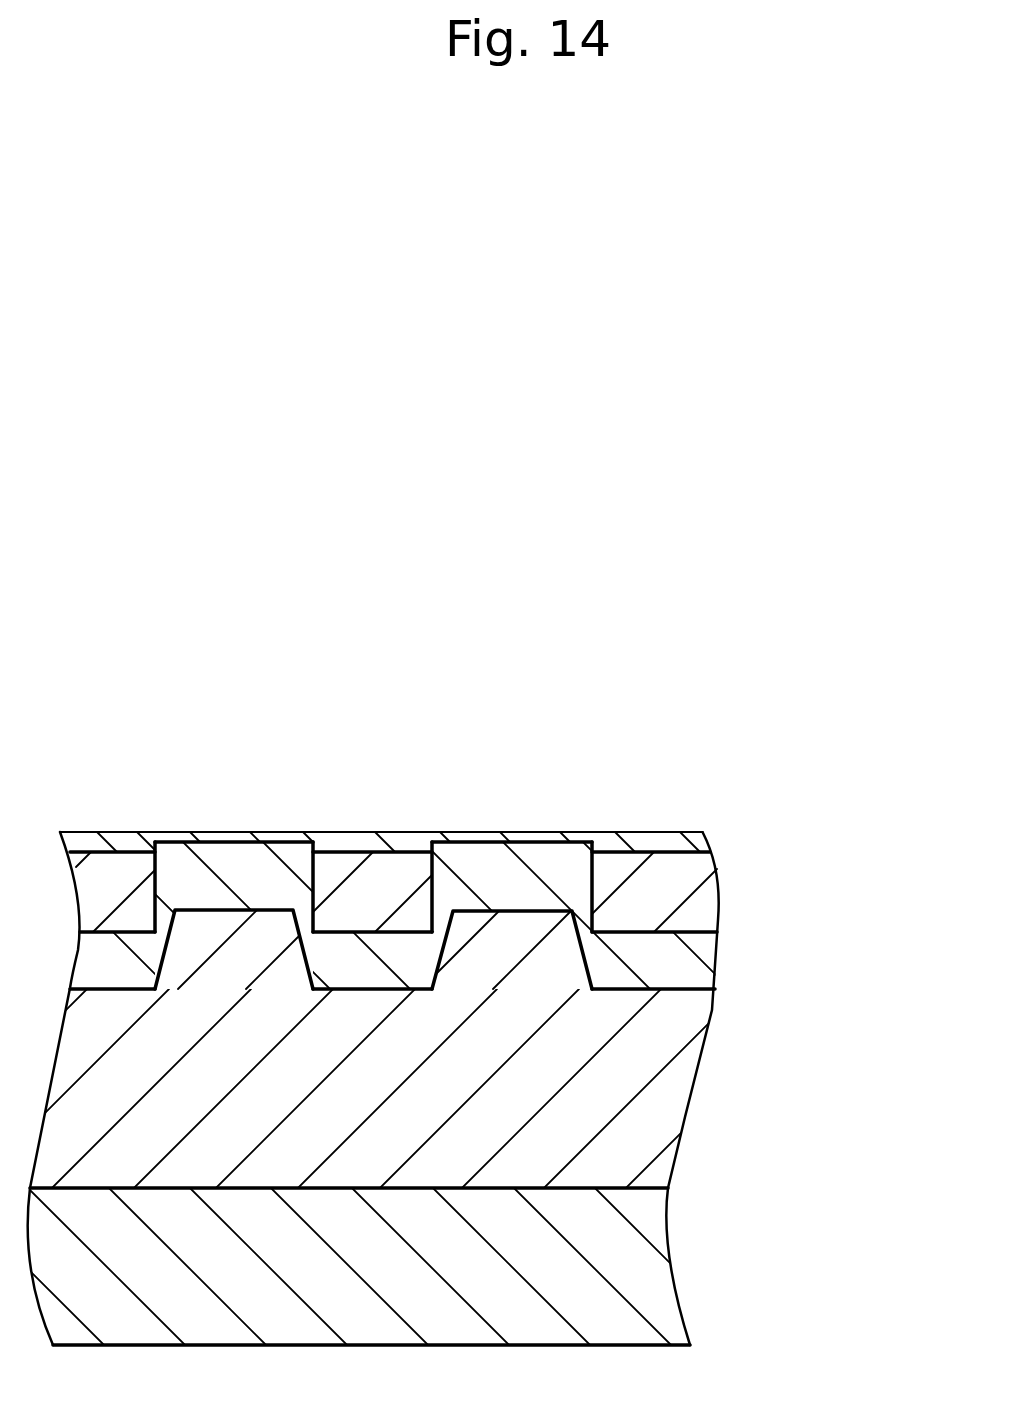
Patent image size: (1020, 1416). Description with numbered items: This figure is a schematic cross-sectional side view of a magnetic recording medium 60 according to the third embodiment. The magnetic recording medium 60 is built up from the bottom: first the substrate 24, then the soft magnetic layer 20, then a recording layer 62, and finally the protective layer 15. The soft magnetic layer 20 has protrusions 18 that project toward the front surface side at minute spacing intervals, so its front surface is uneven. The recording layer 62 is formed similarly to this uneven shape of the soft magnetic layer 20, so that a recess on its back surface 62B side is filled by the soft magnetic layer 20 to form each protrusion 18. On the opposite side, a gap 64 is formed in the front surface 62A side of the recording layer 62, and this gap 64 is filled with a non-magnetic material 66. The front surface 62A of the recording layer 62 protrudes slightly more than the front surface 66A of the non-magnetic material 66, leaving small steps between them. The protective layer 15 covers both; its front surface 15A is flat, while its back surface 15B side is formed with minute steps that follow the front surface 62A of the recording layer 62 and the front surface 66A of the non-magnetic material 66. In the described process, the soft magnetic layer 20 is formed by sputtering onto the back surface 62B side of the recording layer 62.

The magnetic recording medium 60 is at (383, 582).
The protective layer 15 is at (710, 844).
The front surface of the protective layer 15A is at (503, 835).
The back surface of the protective layer 15B is at (463, 843).
The protrusion 18 is at (235, 920).
The soft magnetic layer 20 is at (687, 1114).
The substrate 24 is at (666, 1250).
The recording layer 62 is at (718, 960).
The front surface of the recording layer 62A is at (566, 842).
The back surface of the recording layer 62B is at (673, 992).
The gap 64 is at (433, 806).
The non-magnetic material 66 is at (335, 870).
The front surface of the non-magnetic material 66A is at (640, 853).